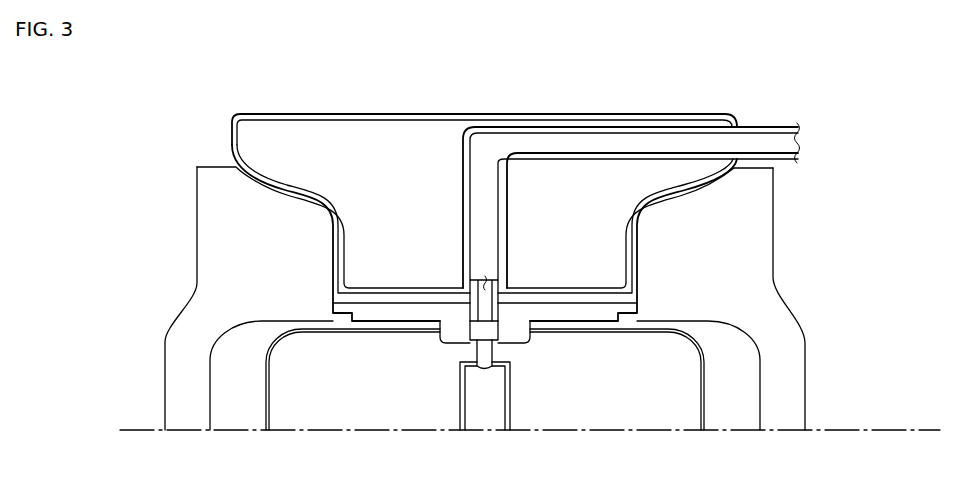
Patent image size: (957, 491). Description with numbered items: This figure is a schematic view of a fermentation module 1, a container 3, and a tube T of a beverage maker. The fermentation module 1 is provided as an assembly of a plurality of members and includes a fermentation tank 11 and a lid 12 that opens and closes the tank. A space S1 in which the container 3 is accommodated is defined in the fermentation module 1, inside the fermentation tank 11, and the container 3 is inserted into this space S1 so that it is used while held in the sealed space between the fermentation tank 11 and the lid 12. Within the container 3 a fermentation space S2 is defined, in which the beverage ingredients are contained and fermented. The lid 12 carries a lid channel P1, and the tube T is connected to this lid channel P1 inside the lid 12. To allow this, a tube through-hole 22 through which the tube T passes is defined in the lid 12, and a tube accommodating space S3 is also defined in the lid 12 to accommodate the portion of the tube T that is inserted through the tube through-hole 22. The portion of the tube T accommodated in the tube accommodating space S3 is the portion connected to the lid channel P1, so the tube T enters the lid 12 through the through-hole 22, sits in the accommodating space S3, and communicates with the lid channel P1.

The fermentation module 1 is at (122, 113).
The fermentation tank 11 is at (205, 177).
The lid 12 is at (233, 129).
The tube through-hole 22 is at (738, 127).
The container 3 is at (252, 361).
The lid channel P1 is at (478, 282).
The space S1 is at (244, 412).
The fermentation space S2 is at (366, 412).
The tube accommodating space S3 is at (549, 122).
The tube T is at (650, 130).